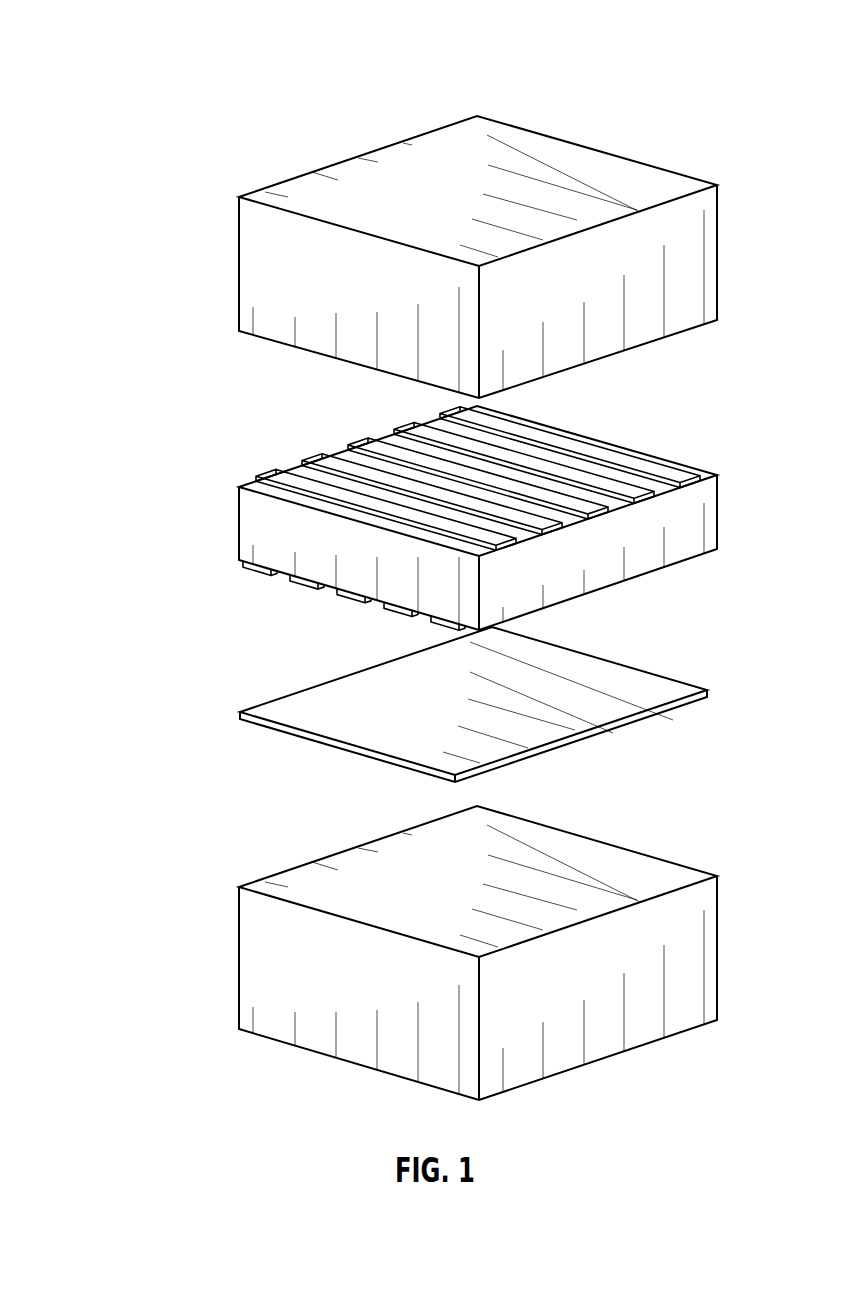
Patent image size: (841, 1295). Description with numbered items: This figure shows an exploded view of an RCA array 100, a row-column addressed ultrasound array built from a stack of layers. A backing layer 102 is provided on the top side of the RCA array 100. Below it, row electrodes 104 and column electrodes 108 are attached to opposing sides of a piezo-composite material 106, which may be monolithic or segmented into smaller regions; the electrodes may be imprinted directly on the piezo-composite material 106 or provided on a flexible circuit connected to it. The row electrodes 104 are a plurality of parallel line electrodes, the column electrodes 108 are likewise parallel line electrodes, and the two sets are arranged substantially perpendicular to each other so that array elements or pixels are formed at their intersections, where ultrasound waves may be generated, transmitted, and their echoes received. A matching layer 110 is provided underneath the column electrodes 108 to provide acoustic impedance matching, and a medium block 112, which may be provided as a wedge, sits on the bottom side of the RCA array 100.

The RCA array 100 is at (132, 37).
The backing layer 102 is at (238, 247).
The row electrodes 104 is at (274, 470).
The piezo-composite material 106 is at (188, 553).
The column electrodes 108 is at (271, 577).
The matching layer 110 is at (240, 712).
The medium block 112 is at (239, 943).